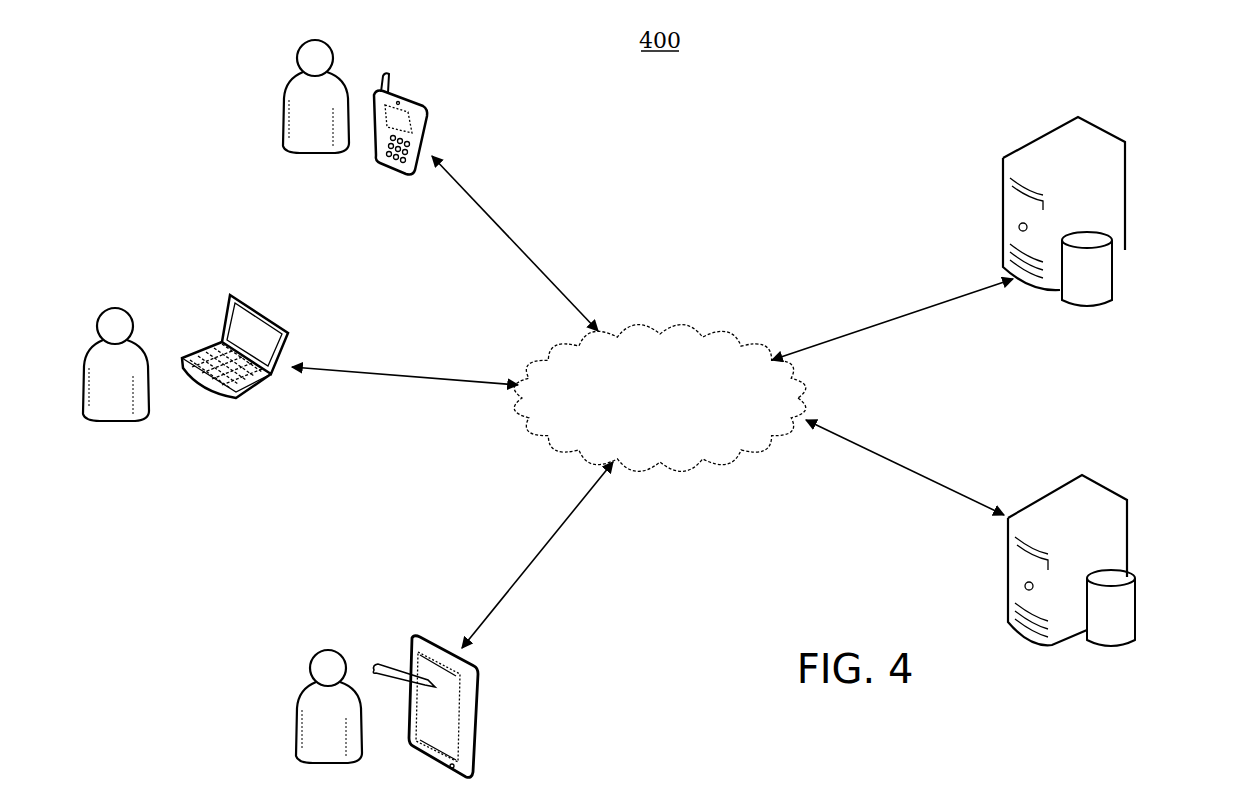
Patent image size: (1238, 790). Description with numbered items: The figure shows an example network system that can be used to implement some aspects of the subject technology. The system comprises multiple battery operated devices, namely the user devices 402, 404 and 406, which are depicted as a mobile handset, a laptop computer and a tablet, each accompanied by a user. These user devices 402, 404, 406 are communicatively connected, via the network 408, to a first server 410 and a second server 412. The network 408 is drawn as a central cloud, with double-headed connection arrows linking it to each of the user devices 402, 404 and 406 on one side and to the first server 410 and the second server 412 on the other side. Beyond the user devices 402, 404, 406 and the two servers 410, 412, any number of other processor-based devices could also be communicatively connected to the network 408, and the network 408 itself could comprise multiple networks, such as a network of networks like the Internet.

The user device 402 is at (412, 95).
The user device 404 is at (262, 310).
The user device 406 is at (420, 637).
The network 408 is at (661, 331).
The first server 410 is at (1125, 142).
The second server 412 is at (1127, 500).